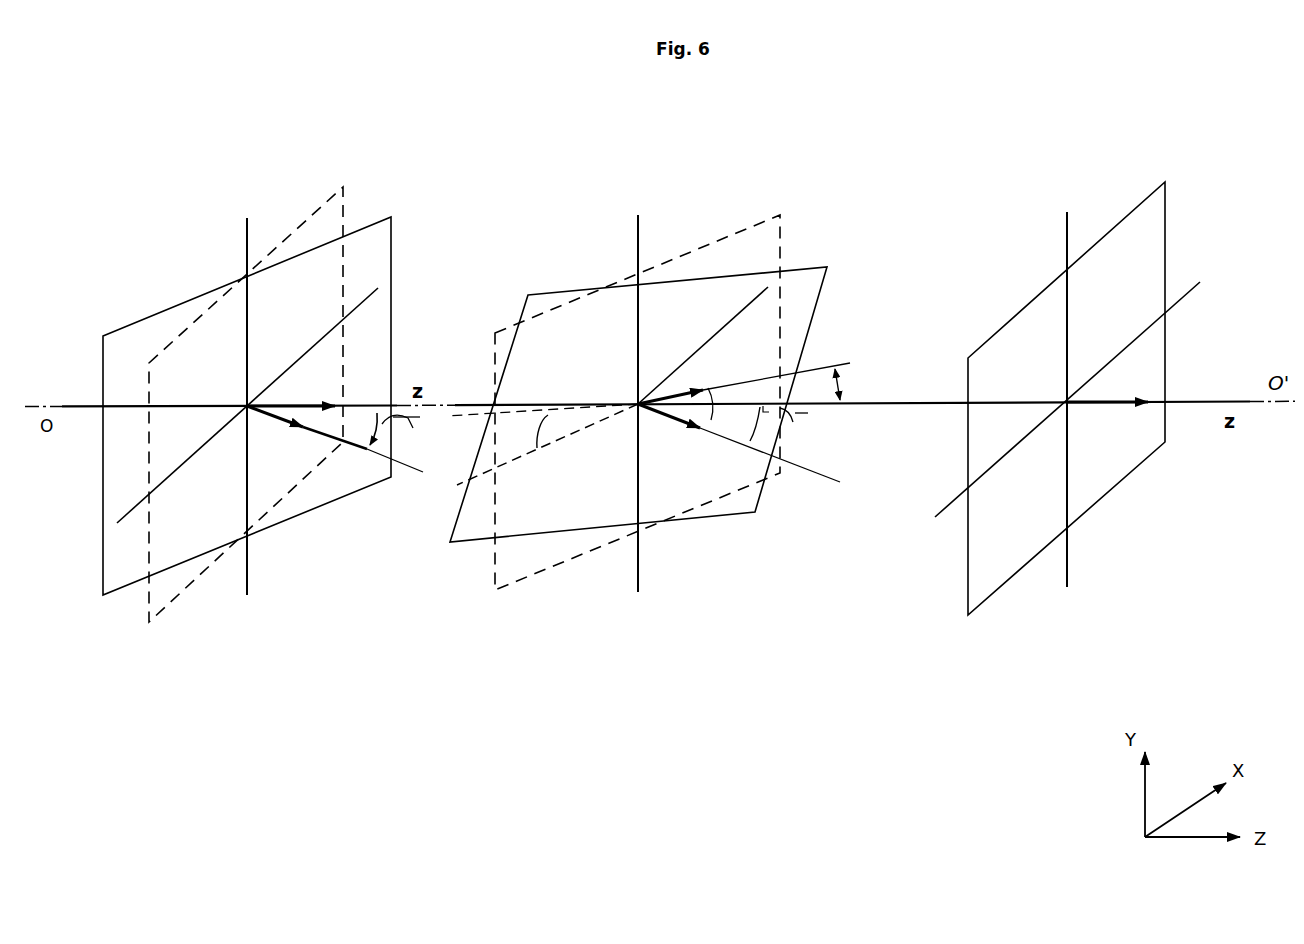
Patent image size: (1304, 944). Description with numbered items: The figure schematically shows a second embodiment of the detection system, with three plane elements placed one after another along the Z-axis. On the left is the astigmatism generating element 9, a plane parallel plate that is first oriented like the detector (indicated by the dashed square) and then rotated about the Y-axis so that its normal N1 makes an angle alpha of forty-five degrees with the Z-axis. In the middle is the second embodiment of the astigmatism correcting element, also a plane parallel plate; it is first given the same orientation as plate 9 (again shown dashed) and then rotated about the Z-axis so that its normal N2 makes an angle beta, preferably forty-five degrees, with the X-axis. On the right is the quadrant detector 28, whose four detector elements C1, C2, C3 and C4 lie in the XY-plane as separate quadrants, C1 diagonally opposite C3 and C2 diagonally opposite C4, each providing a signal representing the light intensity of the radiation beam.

The astigmatism generating element 9 is at (163, 308).
The quadrant detector 28 is at (1121, 196).
The normal to the plate 9 N1 is at (300, 425).
The normal to the plate 27" N2 is at (718, 440).
The detector element C1 is at (1143, 272).
The detector element C2 is at (1003, 353).
The detector element C3 is at (992, 550).
The detector element C4 is at (1108, 468).